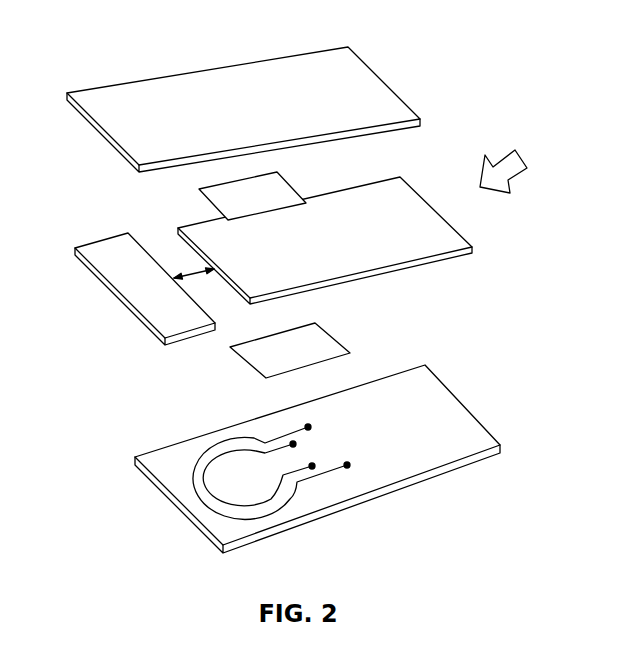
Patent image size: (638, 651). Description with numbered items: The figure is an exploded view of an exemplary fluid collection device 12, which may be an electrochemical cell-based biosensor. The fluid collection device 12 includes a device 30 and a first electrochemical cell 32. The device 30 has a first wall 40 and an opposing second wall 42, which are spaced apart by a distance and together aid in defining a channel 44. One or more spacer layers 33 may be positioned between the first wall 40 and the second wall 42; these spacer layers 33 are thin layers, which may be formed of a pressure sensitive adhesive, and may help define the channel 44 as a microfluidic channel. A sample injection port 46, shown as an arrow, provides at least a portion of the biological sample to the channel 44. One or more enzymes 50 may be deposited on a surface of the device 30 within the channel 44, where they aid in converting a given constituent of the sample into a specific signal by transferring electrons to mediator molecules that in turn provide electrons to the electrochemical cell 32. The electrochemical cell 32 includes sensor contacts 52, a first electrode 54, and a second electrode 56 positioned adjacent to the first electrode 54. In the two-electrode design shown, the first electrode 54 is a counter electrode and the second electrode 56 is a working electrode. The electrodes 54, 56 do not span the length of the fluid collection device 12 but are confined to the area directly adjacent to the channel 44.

The fluid collection device 12 is at (321, 283).
The device 30 is at (289, 283).
The first electrochemical cell 32 is at (271, 481).
The spacer layers 33 is at (408, 197).
The first wall 40 is at (177, 93).
The second wall 42 is at (433, 453).
The channel 44 is at (186, 270).
The sample injection port 46 is at (517, 173).
The enzymes 50 is at (282, 188).
The sensor contacts 52 is at (345, 467).
The first electrode 54 is at (198, 457).
The second electrode 56 is at (205, 475).